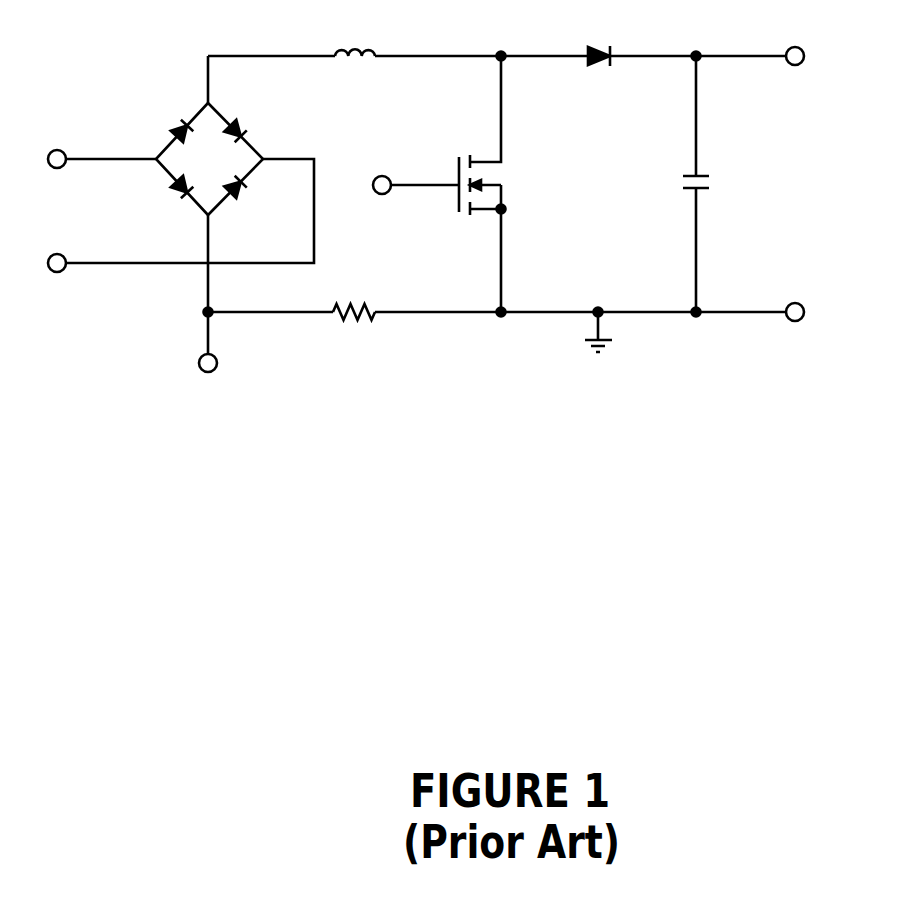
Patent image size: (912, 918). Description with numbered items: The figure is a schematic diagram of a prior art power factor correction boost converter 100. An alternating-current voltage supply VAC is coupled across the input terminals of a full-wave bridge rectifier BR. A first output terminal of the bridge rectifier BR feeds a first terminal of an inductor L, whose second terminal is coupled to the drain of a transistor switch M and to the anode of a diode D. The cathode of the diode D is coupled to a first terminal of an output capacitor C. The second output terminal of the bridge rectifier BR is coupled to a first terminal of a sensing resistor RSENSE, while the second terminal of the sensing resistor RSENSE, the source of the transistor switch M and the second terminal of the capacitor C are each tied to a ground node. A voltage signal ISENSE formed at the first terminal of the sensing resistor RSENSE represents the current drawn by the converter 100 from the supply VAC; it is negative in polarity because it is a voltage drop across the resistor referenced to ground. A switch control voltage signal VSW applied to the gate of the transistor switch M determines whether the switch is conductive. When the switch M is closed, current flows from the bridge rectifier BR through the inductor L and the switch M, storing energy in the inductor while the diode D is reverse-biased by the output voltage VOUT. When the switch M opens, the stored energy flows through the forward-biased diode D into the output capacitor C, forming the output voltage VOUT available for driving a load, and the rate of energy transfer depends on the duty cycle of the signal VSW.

The power factor correction boost converter 100 is at (462, 225).
The full-wave bridge rectifier BR is at (199, 205).
The inductor L is at (355, 32).
The diode D is at (599, 39).
The transistor switch M is at (500, 184).
The output capacitor C is at (714, 184).
The sensing resistor RSENSE is at (352, 330).
The alternating-current voltage supply VAC is at (170, 211).
The switch control voltage signal VSW is at (405, 161).
The output voltage VOUT is at (842, 181).
The current sense voltage signal ISENSE is at (202, 365).